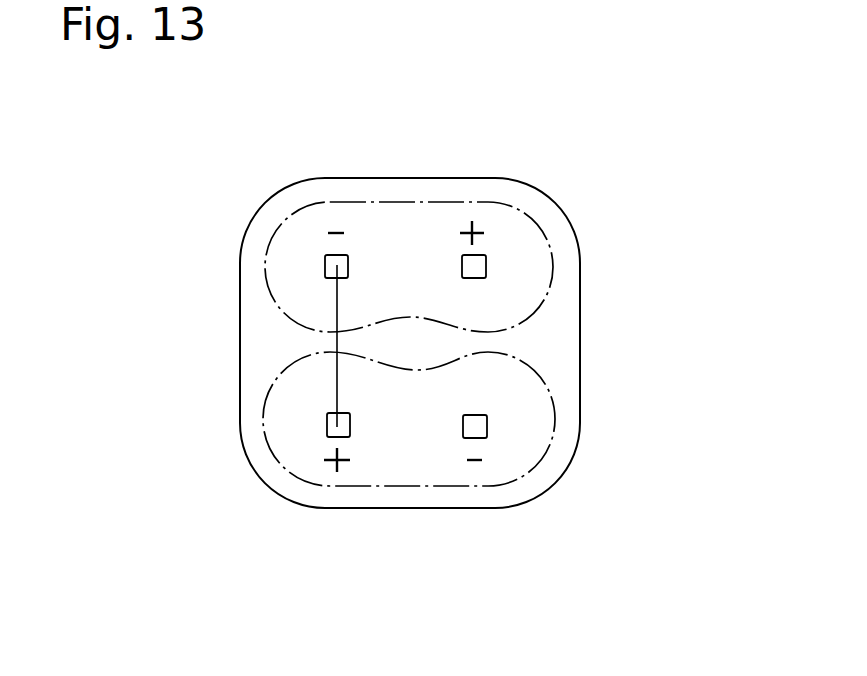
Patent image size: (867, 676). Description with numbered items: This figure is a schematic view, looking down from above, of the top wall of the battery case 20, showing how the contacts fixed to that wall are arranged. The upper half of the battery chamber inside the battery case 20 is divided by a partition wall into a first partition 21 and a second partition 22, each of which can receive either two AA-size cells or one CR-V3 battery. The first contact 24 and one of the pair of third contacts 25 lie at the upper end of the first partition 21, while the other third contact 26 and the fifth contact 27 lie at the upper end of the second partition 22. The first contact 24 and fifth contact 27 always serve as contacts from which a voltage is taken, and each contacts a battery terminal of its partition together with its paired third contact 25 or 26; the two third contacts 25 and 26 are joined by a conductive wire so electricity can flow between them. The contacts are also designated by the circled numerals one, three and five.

The battery case 20 is at (583, 323).
The first partition 21 is at (437, 202).
The second partition 22 is at (385, 487).
The first contact 24 is at (468, 276).
The third contact 25 is at (337, 389).
The third contact 26 is at (337, 389).
The fifth contact 27 is at (475, 427).